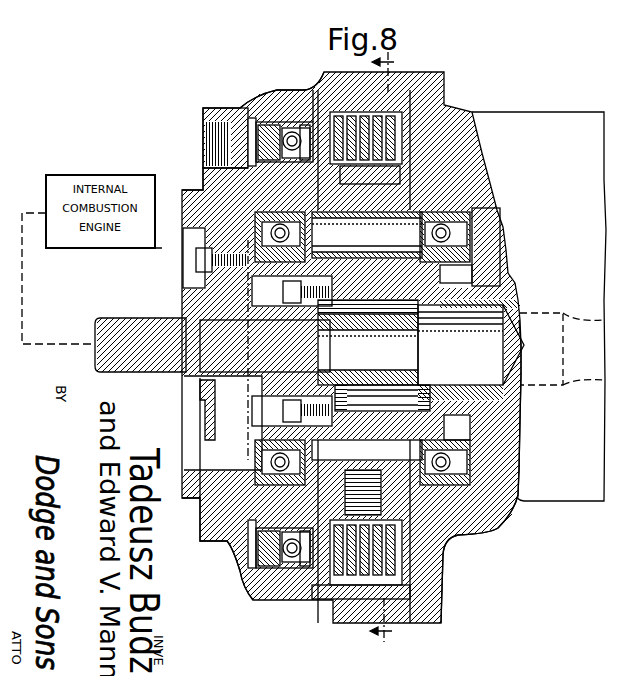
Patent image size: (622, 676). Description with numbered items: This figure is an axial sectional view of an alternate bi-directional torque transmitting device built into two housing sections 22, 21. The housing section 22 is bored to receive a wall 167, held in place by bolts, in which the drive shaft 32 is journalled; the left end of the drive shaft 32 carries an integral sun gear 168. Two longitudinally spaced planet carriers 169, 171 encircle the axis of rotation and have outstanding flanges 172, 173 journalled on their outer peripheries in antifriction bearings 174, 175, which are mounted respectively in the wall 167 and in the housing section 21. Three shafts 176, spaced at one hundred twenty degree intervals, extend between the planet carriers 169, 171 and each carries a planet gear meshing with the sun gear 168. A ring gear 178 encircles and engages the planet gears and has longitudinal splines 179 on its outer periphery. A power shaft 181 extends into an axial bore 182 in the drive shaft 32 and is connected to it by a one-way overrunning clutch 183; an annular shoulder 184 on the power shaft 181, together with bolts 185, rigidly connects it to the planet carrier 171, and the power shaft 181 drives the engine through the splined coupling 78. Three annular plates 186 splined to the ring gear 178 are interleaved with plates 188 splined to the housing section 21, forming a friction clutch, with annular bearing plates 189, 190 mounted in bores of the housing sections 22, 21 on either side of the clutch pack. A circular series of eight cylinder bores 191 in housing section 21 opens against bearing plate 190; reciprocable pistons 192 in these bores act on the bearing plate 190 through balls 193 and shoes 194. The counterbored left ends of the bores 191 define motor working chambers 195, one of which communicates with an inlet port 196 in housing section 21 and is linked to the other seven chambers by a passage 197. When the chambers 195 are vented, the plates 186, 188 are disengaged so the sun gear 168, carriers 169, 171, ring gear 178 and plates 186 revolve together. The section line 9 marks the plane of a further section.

The section line 9- 9 is at (389, 347).
The housing section 21 is at (225, 587).
The housing section 22 is at (520, 525).
The drive shaft 32 is at (518, 372).
The splined coupling 78 is at (130, 372).
The wall 167 is at (488, 254).
The sun gear 168 is at (355, 386).
The planet carrier 169 is at (424, 194).
The planet carrier 171 is at (312, 198).
The outstanding flange 172 is at (468, 435).
The outstanding flange 173 is at (208, 435).
The antifriction bearing 174 is at (474, 463).
The antifriction bearing 175 is at (250, 472).
The shaft 176 is at (360, 238).
The ring gear 178 is at (380, 513).
The longitudinal splines 179 is at (436, 538).
The power shaft 181 is at (450, 370).
The axial bore 182 is at (446, 310).
The one-way overrunning clutch 183 is at (385, 392).
The annular shoulder 184 is at (265, 350).
The bolt 185 is at (283, 290).
The annular plate 186 is at (400, 137).
The plate 188 is at (366, 139).
The annular bearing plate 189 is at (404, 558).
The annular bearing plate 190 is at (334, 571).
The cylinder bore 191 is at (282, 128).
The reciprocable piston 192 is at (250, 125).
The ball 193 is at (303, 128).
The shoe 194 is at (320, 100).
The motor working chamber 195 is at (250, 148).
The inlet port 196 is at (204, 110).
The passage 197 is at (252, 198).